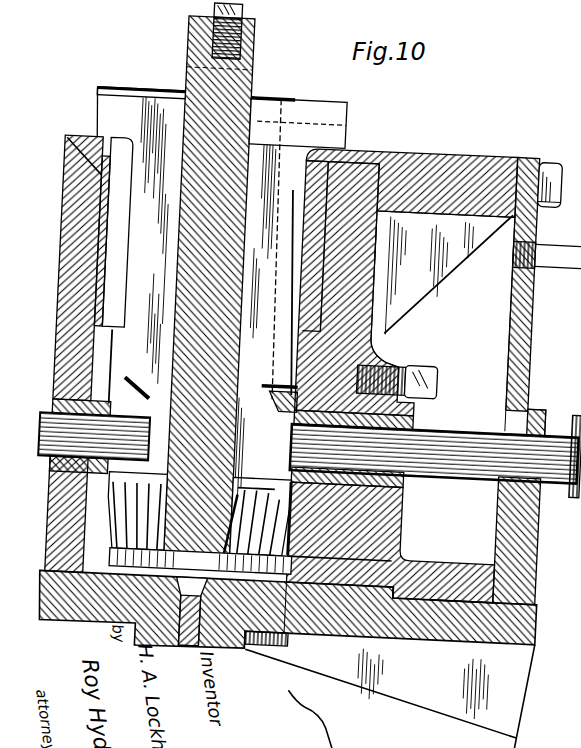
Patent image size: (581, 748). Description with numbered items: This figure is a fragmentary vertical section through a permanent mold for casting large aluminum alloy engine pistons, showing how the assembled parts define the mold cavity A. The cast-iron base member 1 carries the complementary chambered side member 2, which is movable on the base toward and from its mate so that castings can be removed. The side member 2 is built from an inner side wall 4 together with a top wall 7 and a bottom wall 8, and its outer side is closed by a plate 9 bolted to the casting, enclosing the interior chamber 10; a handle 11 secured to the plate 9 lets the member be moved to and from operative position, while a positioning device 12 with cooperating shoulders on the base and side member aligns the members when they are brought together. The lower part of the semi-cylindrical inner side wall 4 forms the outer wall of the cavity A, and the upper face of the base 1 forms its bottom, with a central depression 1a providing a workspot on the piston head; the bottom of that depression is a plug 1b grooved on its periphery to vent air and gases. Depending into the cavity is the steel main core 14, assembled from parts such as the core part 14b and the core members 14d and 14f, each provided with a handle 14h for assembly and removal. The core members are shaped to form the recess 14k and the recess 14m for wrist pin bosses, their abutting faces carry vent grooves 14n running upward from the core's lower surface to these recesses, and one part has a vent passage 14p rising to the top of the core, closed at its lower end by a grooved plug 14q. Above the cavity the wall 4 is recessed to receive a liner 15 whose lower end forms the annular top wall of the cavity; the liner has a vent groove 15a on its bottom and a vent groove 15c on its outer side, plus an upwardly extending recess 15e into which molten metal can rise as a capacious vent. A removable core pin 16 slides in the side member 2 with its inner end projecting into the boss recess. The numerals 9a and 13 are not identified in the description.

The base member 1 is at (530, 695).
The central depression 1a is at (258, 652).
The plug 1b is at (212, 650).
The chambered side member 2 is at (455, 160).
The inner side wall 4 is at (571, 538).
The top wall 7 is at (421, 160).
The bottom wall 8 is at (470, 595).
The plate 9 is at (527, 290).
The housing lower wall 9a is at (300, 550).
The interior chamber 10 is at (428, 277).
The handle 11 is at (549, 245).
The positioning devices 12 is at (402, 585).
The bolt 13 is at (573, 255).
The main core 14 is at (178, 88).
The core part 14b is at (240, 50).
The core member 14d is at (320, 110).
The core member 14f is at (95, 100).
The handle 14h is at (552, 467).
The recess 14k is at (273, 400).
The recess 14m is at (136, 398).
The vent grooves 14n is at (300, 520).
The vent passage 14p is at (334, 123).
The grooved plug 14q is at (270, 353).
The liner 15 is at (370, 268).
The vent groove 15a is at (378, 330).
The vent groove 15c is at (372, 298).
The recess 15e is at (88, 155).
The core pin 16 is at (470, 430).
The mold cavity A is at (300, 628).